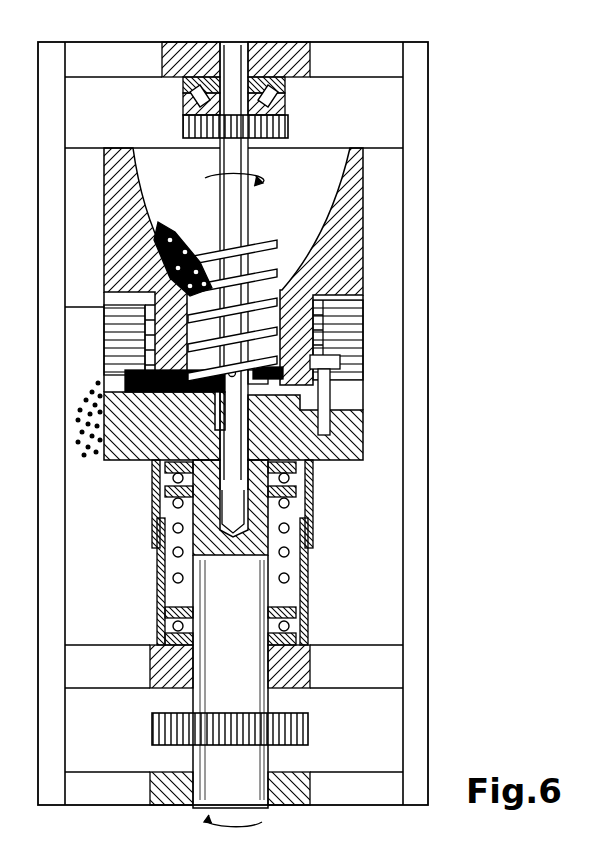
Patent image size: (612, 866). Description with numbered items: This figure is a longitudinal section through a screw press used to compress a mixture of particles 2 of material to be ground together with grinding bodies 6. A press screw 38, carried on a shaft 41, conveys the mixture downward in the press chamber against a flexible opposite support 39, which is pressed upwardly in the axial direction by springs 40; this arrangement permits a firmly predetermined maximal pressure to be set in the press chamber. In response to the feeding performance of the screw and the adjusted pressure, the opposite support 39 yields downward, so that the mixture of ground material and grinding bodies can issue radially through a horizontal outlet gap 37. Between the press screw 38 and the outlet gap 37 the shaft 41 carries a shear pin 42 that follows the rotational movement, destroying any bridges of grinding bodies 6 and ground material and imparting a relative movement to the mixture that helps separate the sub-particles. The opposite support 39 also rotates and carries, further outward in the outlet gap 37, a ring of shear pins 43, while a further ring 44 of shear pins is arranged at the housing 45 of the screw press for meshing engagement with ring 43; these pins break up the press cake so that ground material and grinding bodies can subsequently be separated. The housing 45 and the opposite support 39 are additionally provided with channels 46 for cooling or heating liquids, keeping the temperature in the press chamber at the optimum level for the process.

The particles of material to be ground 2 is at (196, 255).
The grinding bodies 6 is at (168, 230).
The outlet gap 37 is at (100, 388).
The press screw 38 is at (270, 240).
The opposite support 39 is at (345, 450).
The springs 40 is at (307, 570).
The shaft 41 is at (251, 287).
The shear pin 42 is at (262, 374).
The ring of shear pins 43 is at (324, 400).
The further ring of shear pins 44 is at (332, 366).
The housing 45 is at (115, 258).
The channels 46 is at (125, 322).